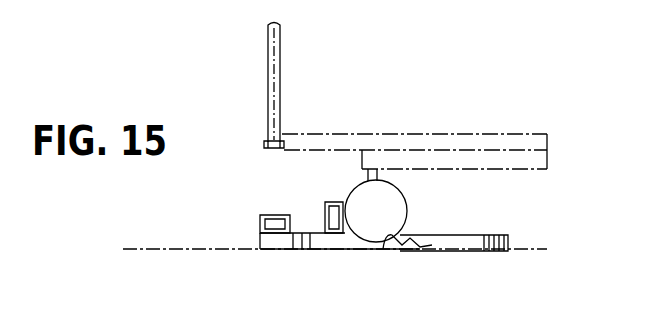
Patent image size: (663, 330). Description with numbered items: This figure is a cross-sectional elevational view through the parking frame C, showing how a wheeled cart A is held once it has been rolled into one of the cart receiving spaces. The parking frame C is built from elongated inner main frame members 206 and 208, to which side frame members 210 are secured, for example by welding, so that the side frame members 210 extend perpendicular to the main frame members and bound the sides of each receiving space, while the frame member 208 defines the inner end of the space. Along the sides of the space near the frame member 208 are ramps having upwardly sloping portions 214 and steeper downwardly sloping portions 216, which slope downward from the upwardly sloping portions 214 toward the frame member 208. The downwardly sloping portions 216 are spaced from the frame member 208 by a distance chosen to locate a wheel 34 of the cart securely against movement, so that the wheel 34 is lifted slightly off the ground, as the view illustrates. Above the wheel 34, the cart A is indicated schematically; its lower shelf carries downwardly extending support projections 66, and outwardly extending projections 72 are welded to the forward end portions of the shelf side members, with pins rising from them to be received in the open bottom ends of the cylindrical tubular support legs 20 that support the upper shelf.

The collapsible support legs 20 is at (276, 57).
The projections 72 is at (264, 140).
The wheeled cart A is at (518, 142).
The support projections 66 is at (382, 176).
The wheel 34 is at (407, 213).
The inner main frame member 208 is at (330, 202).
The inner main frame member 206 is at (262, 222).
The side frame members 210 is at (335, 242).
The parking frame C is at (260, 249).
The upwardly sloping portions 214 is at (437, 236).
The downwardly sloping portions 216 is at (383, 243).